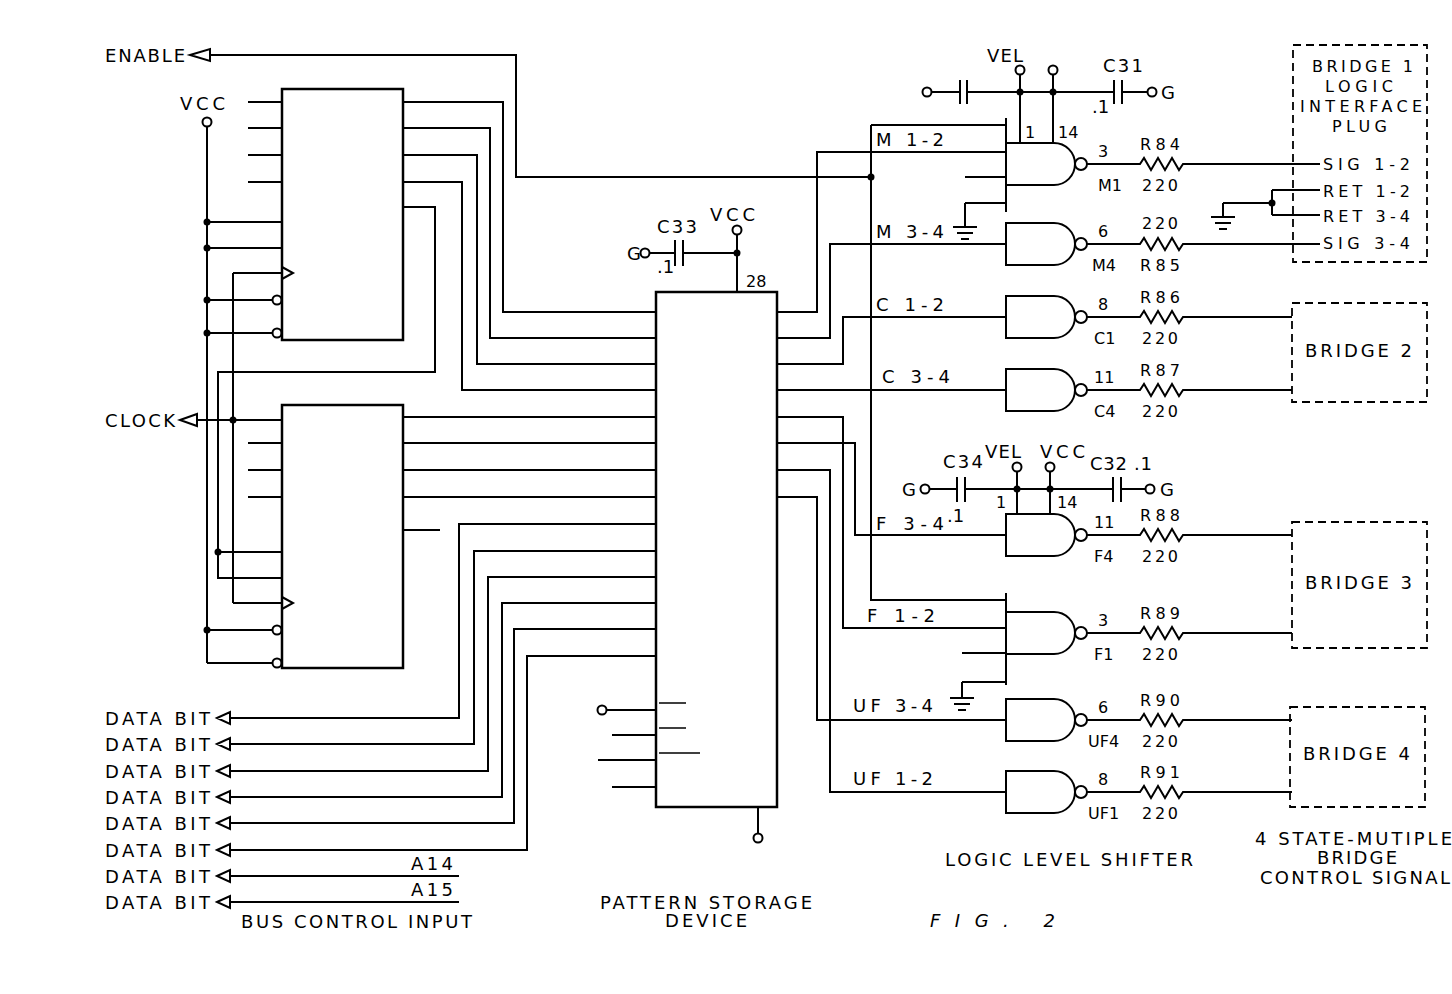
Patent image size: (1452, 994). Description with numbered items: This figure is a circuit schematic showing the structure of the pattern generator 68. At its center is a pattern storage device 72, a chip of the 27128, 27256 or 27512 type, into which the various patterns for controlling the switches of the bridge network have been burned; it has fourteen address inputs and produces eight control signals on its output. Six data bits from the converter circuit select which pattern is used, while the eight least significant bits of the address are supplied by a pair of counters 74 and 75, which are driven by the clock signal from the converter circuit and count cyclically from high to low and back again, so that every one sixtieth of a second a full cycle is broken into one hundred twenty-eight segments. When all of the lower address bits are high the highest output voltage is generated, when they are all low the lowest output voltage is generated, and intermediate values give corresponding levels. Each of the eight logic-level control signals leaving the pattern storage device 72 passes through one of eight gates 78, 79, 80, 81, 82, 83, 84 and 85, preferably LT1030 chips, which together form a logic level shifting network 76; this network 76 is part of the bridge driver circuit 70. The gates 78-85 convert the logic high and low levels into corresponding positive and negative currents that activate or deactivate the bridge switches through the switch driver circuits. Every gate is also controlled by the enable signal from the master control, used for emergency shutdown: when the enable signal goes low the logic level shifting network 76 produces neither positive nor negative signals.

The pattern generator 68 is at (671, 172).
The bridge driver circuit 70 is at (922, 73).
The pattern storage device 72 is at (643, 813).
The counter 74 is at (408, 267).
The counter 75 is at (271, 678).
The logic level shifting network 76 is at (1062, 40).
The gate 78 is at (962, 164).
The gate 79 is at (996, 256).
The gate 80 is at (997, 333).
The gate 81 is at (997, 408).
The gate 82 is at (997, 557).
The gate 83 is at (957, 658).
The gate 84 is at (993, 733).
The gate 85 is at (993, 805).